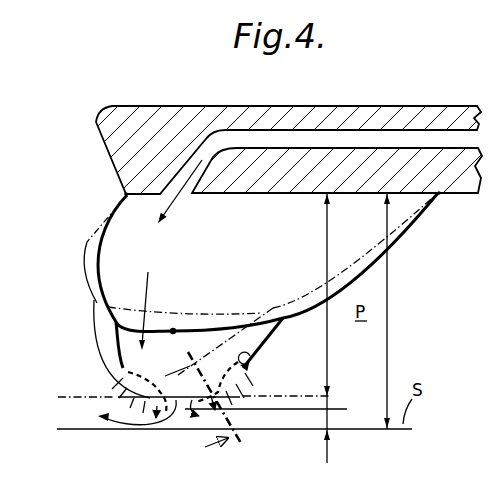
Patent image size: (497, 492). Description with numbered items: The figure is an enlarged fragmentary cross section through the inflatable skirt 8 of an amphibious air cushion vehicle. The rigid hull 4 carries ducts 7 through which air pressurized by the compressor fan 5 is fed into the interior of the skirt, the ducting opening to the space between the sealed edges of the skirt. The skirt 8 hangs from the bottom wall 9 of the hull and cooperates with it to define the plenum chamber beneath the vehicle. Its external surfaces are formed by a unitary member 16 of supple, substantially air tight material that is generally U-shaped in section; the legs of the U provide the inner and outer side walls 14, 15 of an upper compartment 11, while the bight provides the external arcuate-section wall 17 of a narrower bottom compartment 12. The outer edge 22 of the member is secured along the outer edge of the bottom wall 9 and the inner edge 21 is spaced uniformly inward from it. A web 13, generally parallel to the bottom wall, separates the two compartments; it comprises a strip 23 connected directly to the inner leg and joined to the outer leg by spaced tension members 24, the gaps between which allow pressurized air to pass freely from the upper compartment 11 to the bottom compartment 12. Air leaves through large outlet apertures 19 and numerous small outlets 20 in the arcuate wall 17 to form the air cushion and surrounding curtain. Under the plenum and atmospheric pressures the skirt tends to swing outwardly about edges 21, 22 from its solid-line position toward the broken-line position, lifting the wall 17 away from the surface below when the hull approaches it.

The hull 4 is at (120, 107).
The ducts 7 is at (333, 140).
The inflatable skirt 8 is at (100, 227).
The bottom wall 9 is at (257, 194).
The upper compartment 11 is at (206, 254).
The bottom compartment 12 is at (268, 342).
The web 13 is at (248, 322).
The inner side wall 14 is at (397, 250).
The outer side wall 15 is at (97, 260).
The unitary member 16 is at (80, 240).
The external arcuate-section wall 17 is at (100, 347).
The large outlet apertures 19 is at (178, 398).
The small outlets 20 is at (147, 397).
The inner edge 21 is at (440, 194).
The outer edge 22 is at (126, 194).
The strip 23 is at (203, 312).
The tension members 24 is at (130, 318).
The compressor fan 5 is at (209, 399).